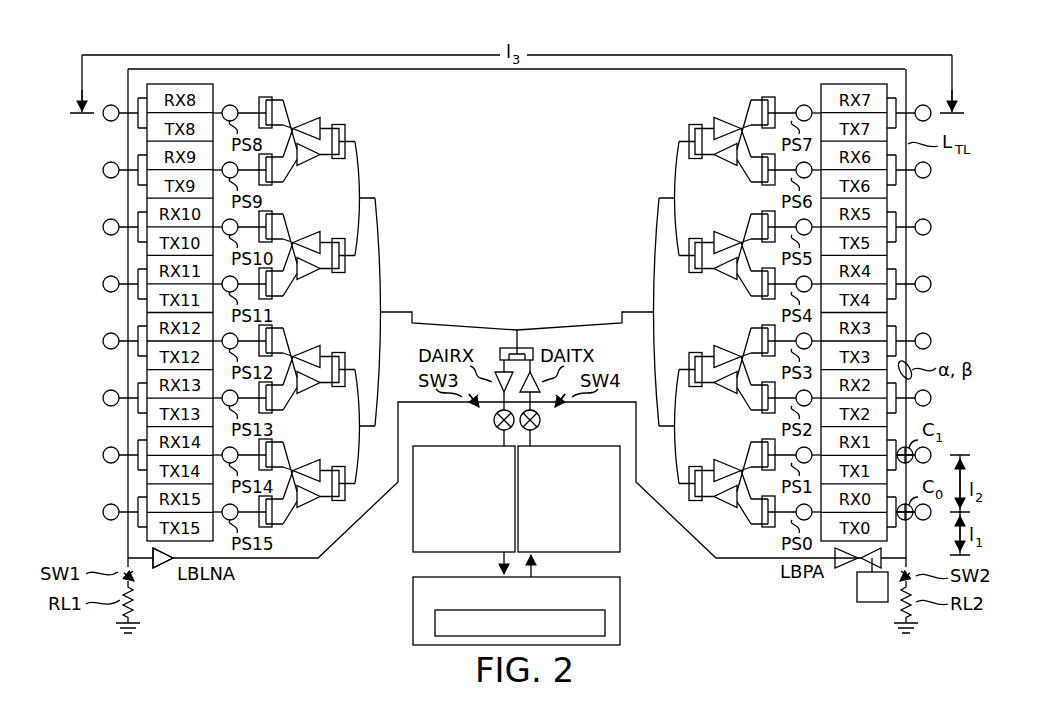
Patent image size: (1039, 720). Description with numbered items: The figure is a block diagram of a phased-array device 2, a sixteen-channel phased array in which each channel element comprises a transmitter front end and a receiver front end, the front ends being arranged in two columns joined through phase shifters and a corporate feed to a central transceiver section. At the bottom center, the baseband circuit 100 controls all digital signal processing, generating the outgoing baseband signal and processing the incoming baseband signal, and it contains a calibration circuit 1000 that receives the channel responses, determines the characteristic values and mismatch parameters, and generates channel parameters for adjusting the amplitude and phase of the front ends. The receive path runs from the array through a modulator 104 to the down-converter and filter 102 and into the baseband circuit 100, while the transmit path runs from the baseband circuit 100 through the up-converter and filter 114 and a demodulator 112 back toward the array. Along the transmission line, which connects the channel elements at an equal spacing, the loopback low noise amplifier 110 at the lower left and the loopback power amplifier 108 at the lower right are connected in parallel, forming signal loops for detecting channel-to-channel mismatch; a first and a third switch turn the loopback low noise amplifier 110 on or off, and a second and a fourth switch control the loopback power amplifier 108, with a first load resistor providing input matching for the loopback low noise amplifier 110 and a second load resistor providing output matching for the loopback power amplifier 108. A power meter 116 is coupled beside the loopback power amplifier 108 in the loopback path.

The phased-array device 2 is at (978, 85).
The baseband circuit 100 is at (556, 610).
The calibration circuit 1000 is at (605, 623).
The down-converter and filter 102 is at (413, 540).
The modulator 104 is at (493, 420).
The Loopback Power Amplifier (LBPA) 108 is at (850, 568).
The Loopback Low Noise Amplifier (LBLNA) 110 is at (163, 569).
The demodulator 112 is at (541, 420).
The up-converter and filter 114 is at (620, 540).
The power meter (PM) 116 is at (872, 603).